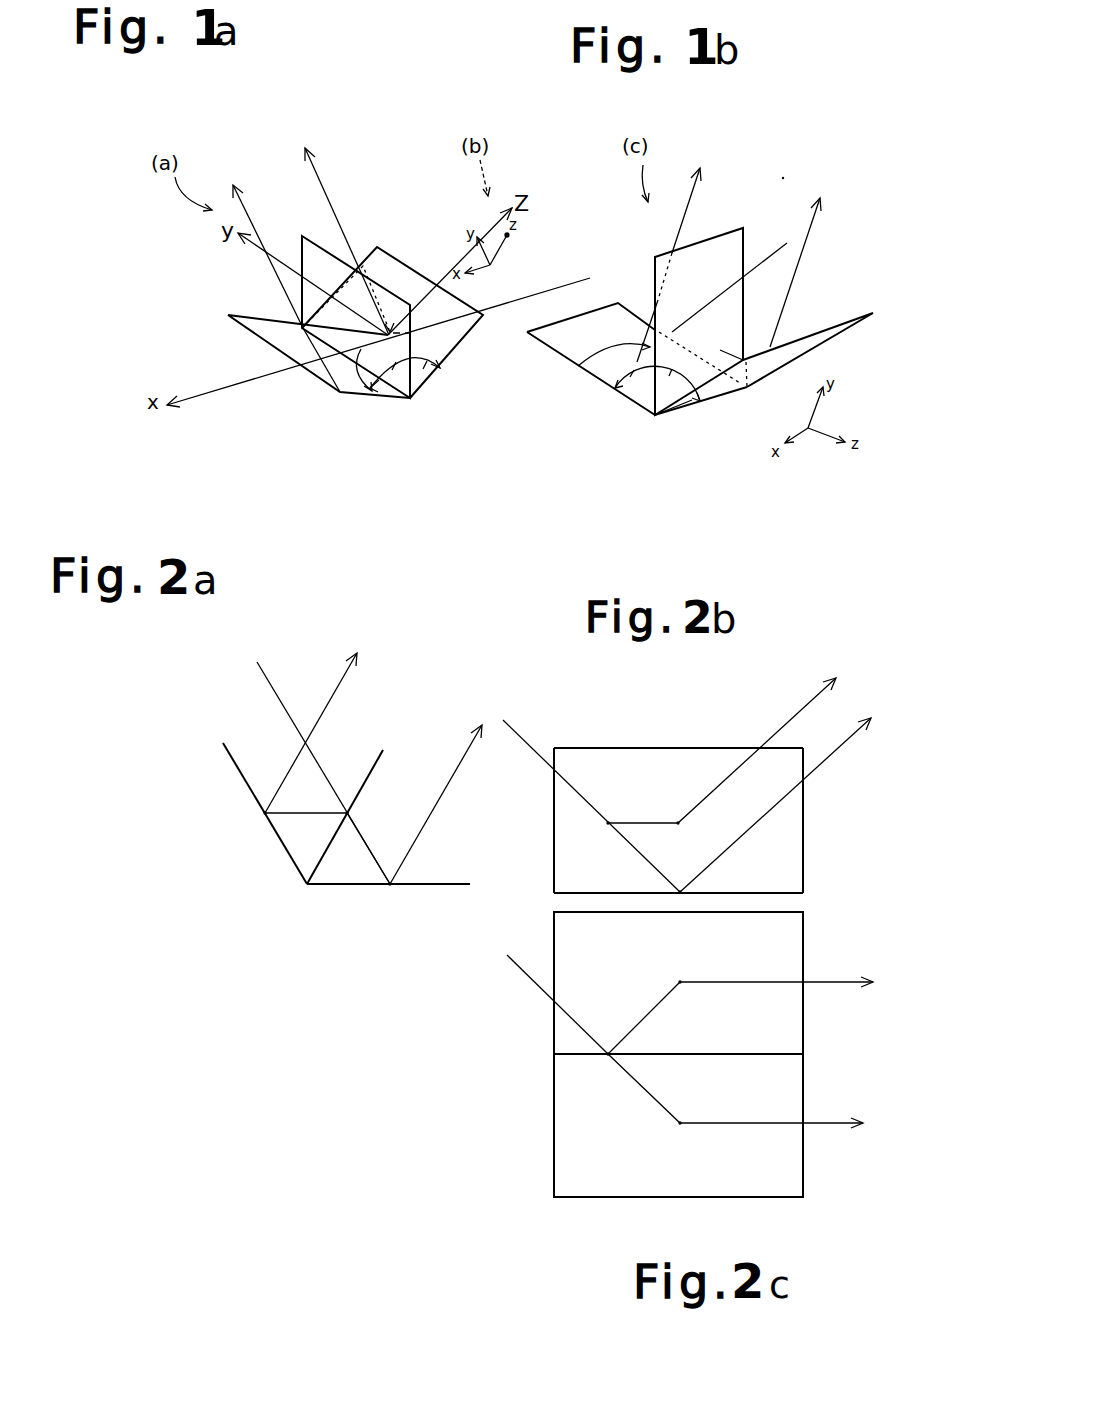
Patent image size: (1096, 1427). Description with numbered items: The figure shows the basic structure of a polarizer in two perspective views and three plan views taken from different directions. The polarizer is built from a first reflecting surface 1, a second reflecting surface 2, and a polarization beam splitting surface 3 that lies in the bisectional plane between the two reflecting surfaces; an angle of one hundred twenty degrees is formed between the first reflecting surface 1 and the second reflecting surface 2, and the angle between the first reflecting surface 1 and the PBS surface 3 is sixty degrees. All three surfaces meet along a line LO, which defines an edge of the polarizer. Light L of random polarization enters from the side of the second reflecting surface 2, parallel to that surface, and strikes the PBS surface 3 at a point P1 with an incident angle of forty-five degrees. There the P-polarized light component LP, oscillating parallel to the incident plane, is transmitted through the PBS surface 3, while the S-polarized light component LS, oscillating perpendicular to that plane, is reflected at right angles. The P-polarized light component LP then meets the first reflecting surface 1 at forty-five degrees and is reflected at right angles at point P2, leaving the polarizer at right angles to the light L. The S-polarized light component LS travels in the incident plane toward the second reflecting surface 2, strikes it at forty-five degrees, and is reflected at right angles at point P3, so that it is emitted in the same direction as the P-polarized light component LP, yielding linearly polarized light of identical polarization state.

In FIG. 1A, the first reflecting surface 1 is at (258, 322).
In FIG. 1B, the first reflecting surface 1 is at (620, 316).
In FIG. 2A, the first reflecting surface 1 is at (438, 884).
In FIG. 2B, the first reflecting surface 1 is at (782, 892).
In FIG. 2C, the first reflecting surface 1 is at (568, 1130).
In FIG. 1A, the second reflecting surface 2 is at (395, 268).
In FIG. 1B, the second reflecting surface 2 is at (807, 343).
In FIG. 2A, the second reflecting surface 2 is at (245, 775).
In FIG. 2B, the second reflecting surface 2 is at (720, 757).
In FIG. 2C, the second reflecting surface 2 is at (573, 943).
In FIG. 1A, the polarization beam splitting surface 3 is at (302, 256).
In FIG. 1B, the polarization beam splitting surface 3 is at (733, 252).
In FIG. 2A, the polarization beam splitting surface 3 is at (383, 748).
In FIG. 2B, the polarization beam splitting surface 3 is at (790, 808).
In FIG. 2C, the polarization beam splitting surface 3 is at (770, 1053).
In FIG. 1A, the light L is at (386, 337).
In FIG. 1B, the light L is at (770, 250).
In FIG. 2A, the light L is at (317, 761).
In FIG. 2B, the light L is at (591, 806).
In FIG. 2C, the light L is at (546, 999).
In FIG. 1A, the P-polarized light component LP is at (337, 388).
In FIG. 1B, the P-polarized light component LP is at (578, 366).
In FIG. 2A, the P-polarized light component LP is at (368, 847).
In FIG. 1B, the S-polarized light component LS is at (720, 350).
In FIG. 2A, the S-polarized light component LS is at (302, 813).
In FIG. 1B, the line (edge line) LO is at (692, 400).
In FIG. 2A, the point P1 is at (350, 812).
In FIG. 2B, the point P1 is at (610, 822).
In FIG. 2C, the point P1 is at (610, 1054).
In FIG. 2A, the point P2 is at (388, 887).
In FIG. 2B, the point P2 is at (680, 892).
In FIG. 2C, the point P2 is at (682, 1125).
In FIG. 2A, the point P3 is at (263, 817).
In FIG. 2B, the point P3 is at (675, 820).
In FIG. 2C, the point P3 is at (680, 982).